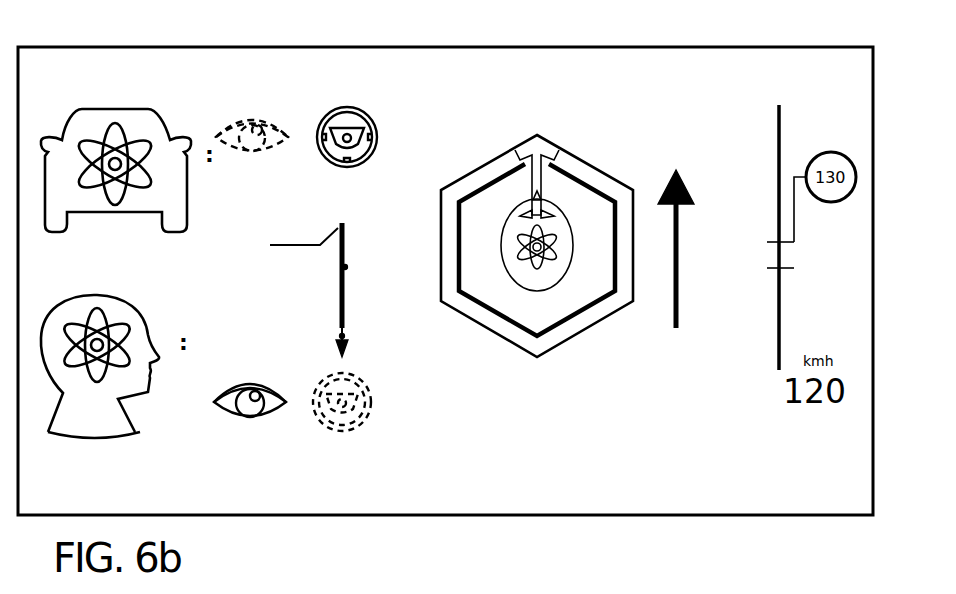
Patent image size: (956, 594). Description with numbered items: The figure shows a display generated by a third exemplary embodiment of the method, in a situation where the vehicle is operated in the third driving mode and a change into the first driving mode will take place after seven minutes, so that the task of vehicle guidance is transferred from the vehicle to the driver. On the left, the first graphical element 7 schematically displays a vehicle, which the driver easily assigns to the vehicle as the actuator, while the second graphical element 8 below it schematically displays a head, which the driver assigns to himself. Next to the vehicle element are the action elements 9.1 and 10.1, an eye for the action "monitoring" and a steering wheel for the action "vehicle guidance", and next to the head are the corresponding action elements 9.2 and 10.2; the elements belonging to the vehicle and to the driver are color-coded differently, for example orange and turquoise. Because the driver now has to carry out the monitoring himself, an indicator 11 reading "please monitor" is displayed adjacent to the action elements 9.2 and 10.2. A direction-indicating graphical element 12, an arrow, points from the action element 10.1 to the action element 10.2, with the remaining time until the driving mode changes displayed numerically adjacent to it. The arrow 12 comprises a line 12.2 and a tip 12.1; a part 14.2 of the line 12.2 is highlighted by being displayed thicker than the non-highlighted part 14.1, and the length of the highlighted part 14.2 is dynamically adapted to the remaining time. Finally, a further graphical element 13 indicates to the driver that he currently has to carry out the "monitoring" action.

The first graphical element 7 is at (98, 108).
The second graphical element 8 is at (82, 295).
The first graphical action element 9.1 is at (237, 118).
The first graphical action element 9.2 is at (238, 421).
The second graphical action element 10.1 is at (354, 110).
The second graphical action element 10.2 is at (340, 431).
The indicator 11 is at (480, 418).
The direction-indicating graphical element 12 is at (292, 285).
The tip 12.1 is at (349, 352).
The line 12.2 is at (338, 333).
The further graphical element 13 is at (583, 153).
The non-highlighted part 14.1 is at (345, 336).
The highlighted part 14.2 is at (345, 267).